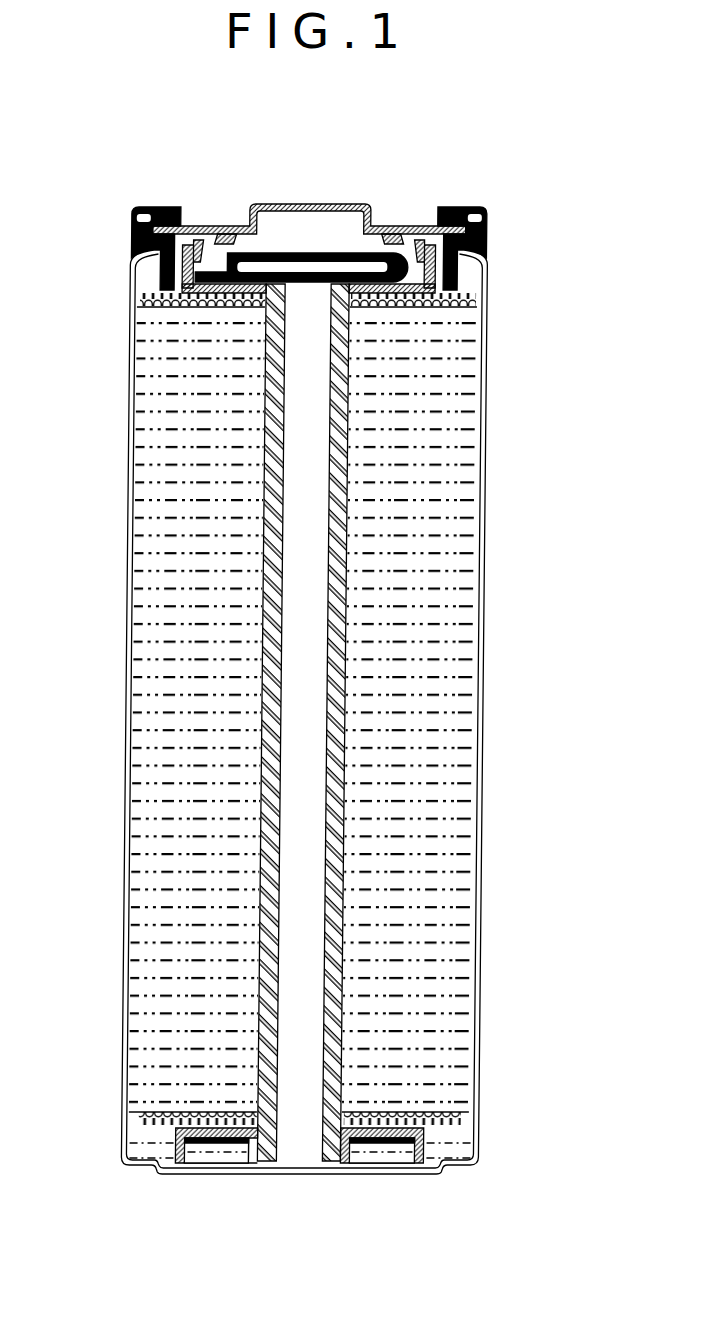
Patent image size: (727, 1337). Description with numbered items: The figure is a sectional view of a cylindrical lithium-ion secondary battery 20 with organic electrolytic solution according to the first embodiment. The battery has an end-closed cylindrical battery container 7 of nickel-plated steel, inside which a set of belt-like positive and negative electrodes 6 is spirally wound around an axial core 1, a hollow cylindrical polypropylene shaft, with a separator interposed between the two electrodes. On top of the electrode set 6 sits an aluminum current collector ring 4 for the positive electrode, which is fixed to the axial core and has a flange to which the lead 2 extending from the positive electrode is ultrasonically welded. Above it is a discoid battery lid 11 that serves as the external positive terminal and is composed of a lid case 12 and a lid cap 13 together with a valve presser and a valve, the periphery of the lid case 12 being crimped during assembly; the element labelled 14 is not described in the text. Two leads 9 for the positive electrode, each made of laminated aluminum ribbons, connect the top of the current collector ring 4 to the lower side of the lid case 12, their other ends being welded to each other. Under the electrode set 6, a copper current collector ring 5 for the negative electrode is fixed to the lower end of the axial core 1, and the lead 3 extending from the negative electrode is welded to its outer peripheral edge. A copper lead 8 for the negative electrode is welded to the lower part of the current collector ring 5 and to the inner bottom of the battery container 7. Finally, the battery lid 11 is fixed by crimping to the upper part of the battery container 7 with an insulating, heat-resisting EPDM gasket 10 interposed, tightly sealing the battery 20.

The axial core 1 is at (343, 613).
The lead extending from the positive electrode 2 is at (463, 298).
The lead extending from the negative electrode 3 is at (460, 1118).
The current collector ring for the positive electrode 4 is at (183, 275).
The current collector ring for the negative electrode 5 is at (177, 1150).
The set of positive and negative electrodes 6 is at (168, 772).
The battery container 7 is at (125, 850).
The lead for the negative electrode 8 is at (350, 1152).
The leads for the positive electrode 9 is at (308, 283).
The gasket 10 is at (487, 223).
The battery lid 11 is at (330, 227).
The lid case 12 is at (265, 252).
The lid cap 13 is at (200, 228).
The disk holder 14 is at (392, 228).
The lithium-ion secondary battery of cylindrical type 20 is at (313, 184).